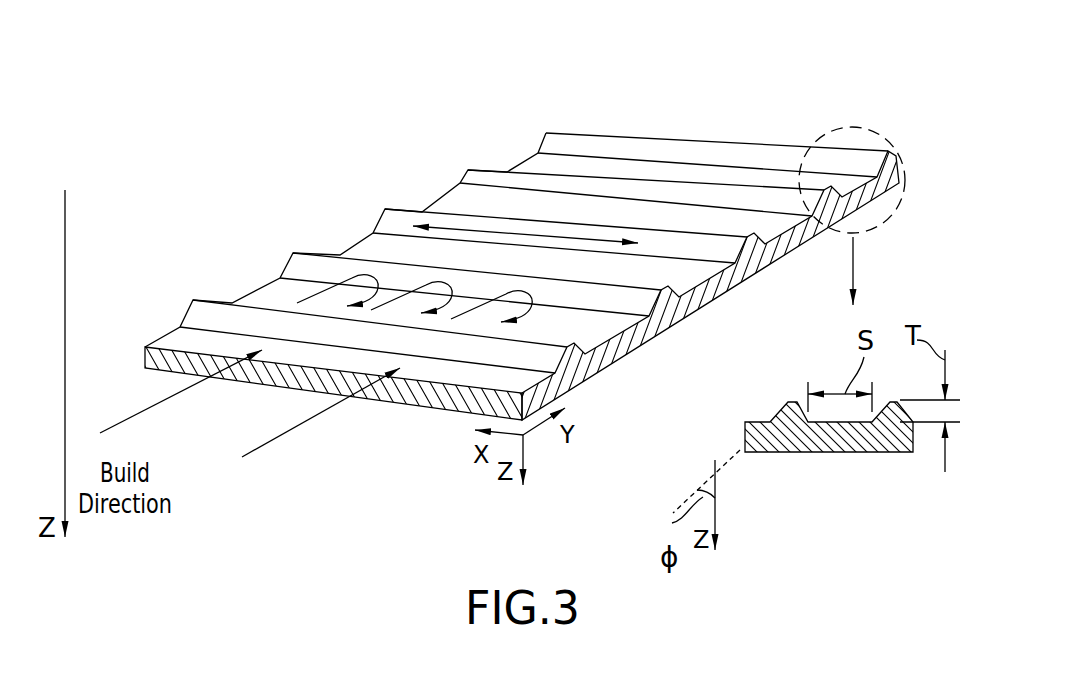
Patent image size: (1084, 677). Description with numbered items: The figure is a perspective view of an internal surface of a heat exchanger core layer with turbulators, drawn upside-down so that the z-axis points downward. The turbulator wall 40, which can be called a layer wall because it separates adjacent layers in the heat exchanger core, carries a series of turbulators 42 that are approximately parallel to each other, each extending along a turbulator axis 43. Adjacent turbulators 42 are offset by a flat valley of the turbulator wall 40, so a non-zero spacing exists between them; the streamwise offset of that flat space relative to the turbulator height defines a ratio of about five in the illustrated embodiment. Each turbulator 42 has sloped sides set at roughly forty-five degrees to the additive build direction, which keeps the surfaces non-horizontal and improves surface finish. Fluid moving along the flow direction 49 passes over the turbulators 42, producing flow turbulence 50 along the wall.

The turbulator wall 40 is at (183, 358).
The turbulator 42 is at (503, 236).
The turbulator axis 43 is at (458, 208).
The flow direction 49 is at (307, 422).
The flow turbulence 50 is at (352, 278).